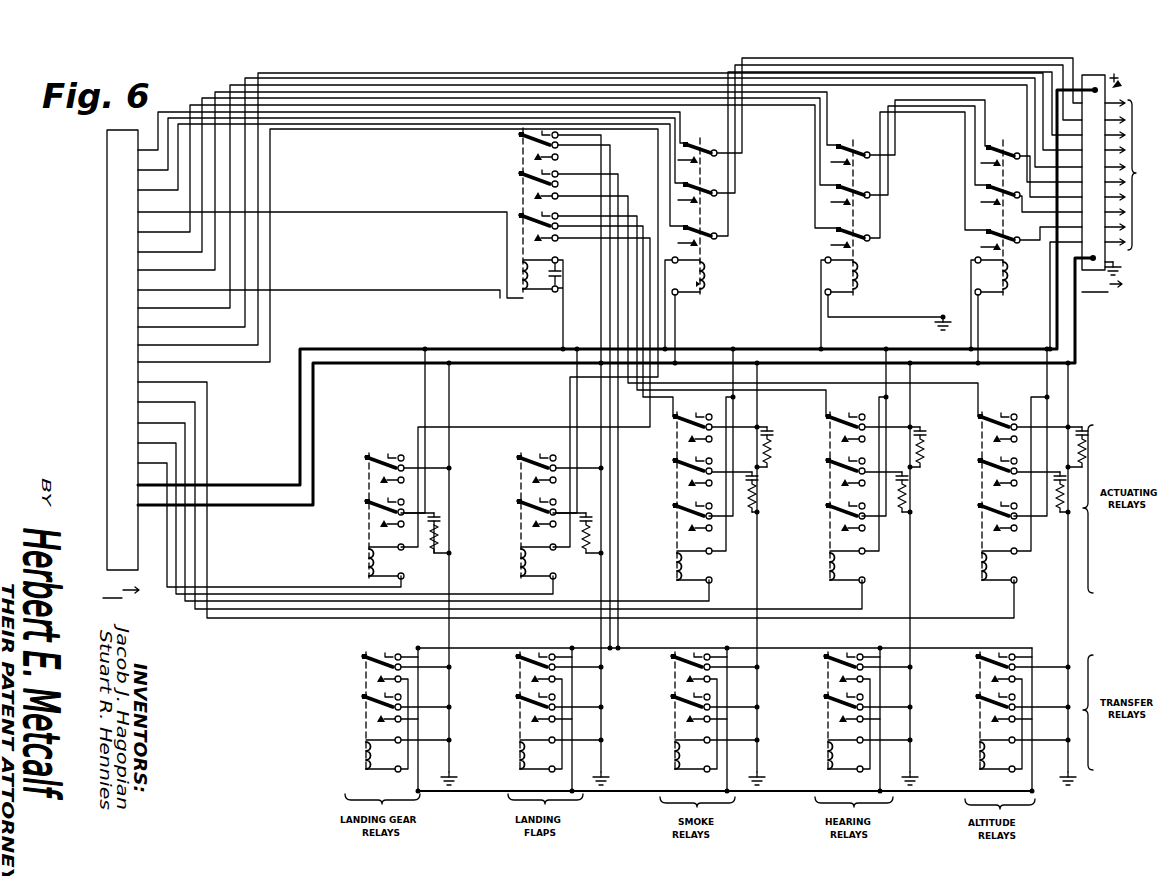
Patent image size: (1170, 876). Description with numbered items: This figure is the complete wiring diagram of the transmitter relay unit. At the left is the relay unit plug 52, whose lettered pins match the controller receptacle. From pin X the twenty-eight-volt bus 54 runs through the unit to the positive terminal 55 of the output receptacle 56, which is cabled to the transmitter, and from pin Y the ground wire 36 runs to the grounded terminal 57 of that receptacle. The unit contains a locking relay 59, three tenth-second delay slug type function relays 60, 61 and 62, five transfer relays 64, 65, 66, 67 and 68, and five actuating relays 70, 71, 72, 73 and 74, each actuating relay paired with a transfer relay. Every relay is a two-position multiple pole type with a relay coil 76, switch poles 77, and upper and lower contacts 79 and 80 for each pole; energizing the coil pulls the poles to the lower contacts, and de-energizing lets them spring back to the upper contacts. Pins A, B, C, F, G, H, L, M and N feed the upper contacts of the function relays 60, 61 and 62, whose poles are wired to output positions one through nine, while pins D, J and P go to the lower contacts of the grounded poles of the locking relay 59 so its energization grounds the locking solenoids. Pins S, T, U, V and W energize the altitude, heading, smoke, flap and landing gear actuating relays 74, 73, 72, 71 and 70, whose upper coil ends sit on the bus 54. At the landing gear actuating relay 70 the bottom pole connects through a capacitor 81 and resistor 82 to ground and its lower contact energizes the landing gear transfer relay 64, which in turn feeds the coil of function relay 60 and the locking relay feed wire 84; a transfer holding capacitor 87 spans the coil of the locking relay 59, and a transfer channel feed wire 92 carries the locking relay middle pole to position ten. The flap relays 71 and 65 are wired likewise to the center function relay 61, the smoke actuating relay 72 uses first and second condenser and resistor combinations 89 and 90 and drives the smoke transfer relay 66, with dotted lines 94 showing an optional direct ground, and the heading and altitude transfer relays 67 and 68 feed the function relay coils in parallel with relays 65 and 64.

The relay unit plug 52 is at (107, 296).
The +28-volt bus 54 is at (262, 474).
The ground wire 36 is at (244, 512).
The +28-volt terminal 55 is at (1100, 72).
The output receptacle 56 is at (1120, 81).
The grounded terminal 57 is at (1106, 236).
The locking relay 59 is at (537, 439).
The left-hand function relay 60 is at (700, 202).
The center function relay 61 is at (853, 236).
The right-hand function relay 62 is at (1003, 244).
The landing gear transfer relay 64 is at (362, 719).
The flap transfer relay 65 is at (515, 713).
The smoke transfer relay 66 is at (671, 728).
The heading transfer relay 67 is at (824, 728).
The altitude transfer relay 68 is at (976, 728).
The landing gear actuating relay 70 is at (398, 560).
The flap actuating relay 71 is at (519, 531).
The smoke actuating relay 72 is at (720, 560).
The heading actuating relay 73 is at (828, 521).
The altitude actuating relay 74 is at (980, 531).
The relay coil 76 is at (520, 280).
The switch pole 77 is at (527, 178).
The upper contact 79 is at (540, 216).
The lower contact 80 is at (540, 238).
The capacitor 81 is at (440, 520).
The resistor 82 is at (434, 552).
The locking relay feed wire 84 is at (498, 770).
The transfer holding capacitor 87 is at (555, 292).
The first condenser and resistor combination 89 is at (772, 460).
The second condenser and resistor combination 90 is at (756, 499).
The transfer channel feed wire 92 is at (1034, 276).
The dotted lines 94 is at (936, 317).